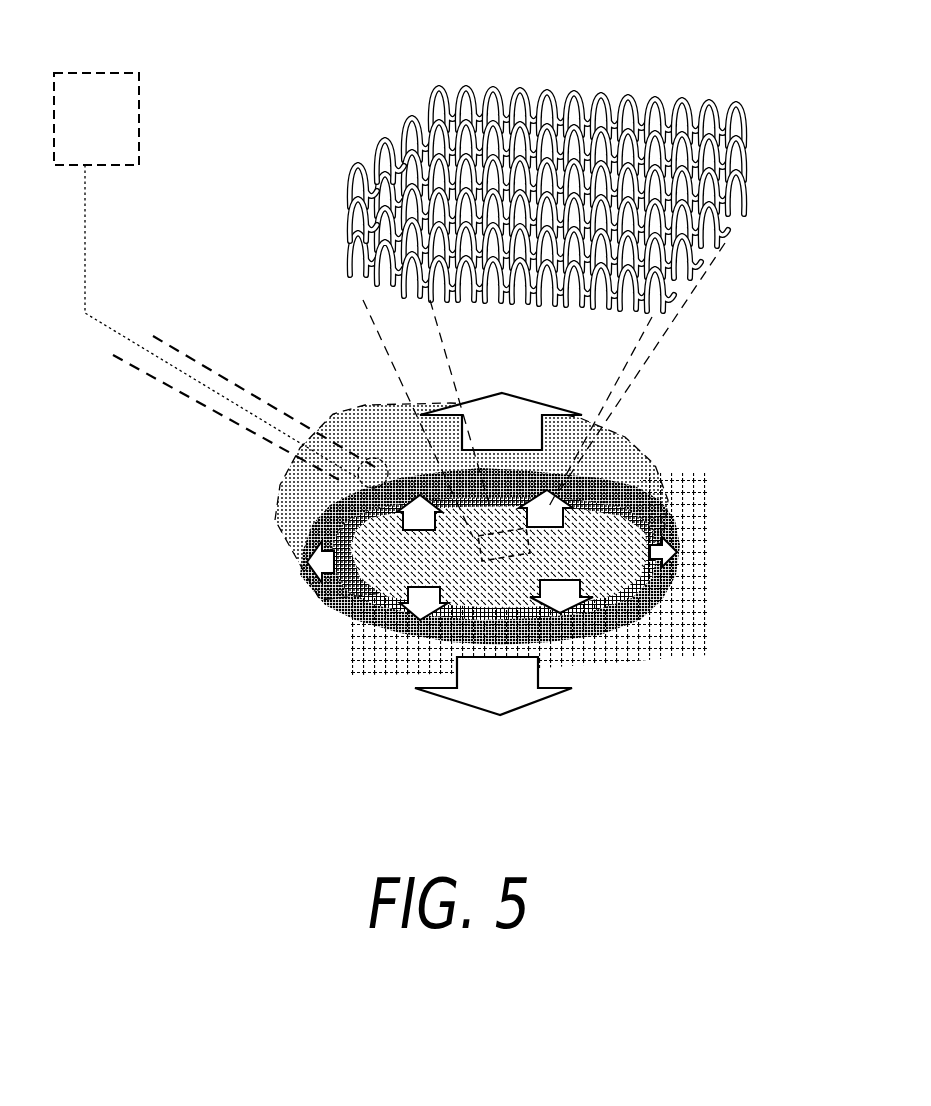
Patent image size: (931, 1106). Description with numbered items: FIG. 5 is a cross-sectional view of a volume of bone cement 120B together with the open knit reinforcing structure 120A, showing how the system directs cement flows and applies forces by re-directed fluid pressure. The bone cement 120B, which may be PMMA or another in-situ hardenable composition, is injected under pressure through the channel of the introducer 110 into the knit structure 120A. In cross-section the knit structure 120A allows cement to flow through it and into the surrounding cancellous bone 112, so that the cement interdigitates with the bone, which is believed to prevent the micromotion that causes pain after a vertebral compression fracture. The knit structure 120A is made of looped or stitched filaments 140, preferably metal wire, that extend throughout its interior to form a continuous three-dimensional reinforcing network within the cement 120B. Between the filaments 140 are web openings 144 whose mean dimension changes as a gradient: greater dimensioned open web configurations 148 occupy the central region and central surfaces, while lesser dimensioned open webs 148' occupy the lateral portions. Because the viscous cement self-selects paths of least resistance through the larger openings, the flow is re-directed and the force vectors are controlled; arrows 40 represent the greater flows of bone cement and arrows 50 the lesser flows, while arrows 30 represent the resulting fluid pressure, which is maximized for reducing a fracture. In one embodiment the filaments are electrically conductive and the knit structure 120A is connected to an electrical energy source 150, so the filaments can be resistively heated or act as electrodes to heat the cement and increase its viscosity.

The open knit reinforcing structure 120A is at (419, 59).
The bone cement 120B is at (283, 537).
The filaments 140 is at (392, 130).
The web openings 144 is at (357, 218).
The introducer 110 is at (243, 380).
The electrical energy source 150 is at (113, 133).
The arrows representing lesser flows of bone cement 50 is at (303, 572).
The greater dimensioned open web configurations 148 is at (456, 609).
The lesser dimensioned open webs 148' is at (440, 590).
The arrows representing greater flows of bone cement 40 is at (390, 573).
The arrows representing fluid pressure 30 is at (480, 690).
The cancellous bone 112 is at (606, 677).